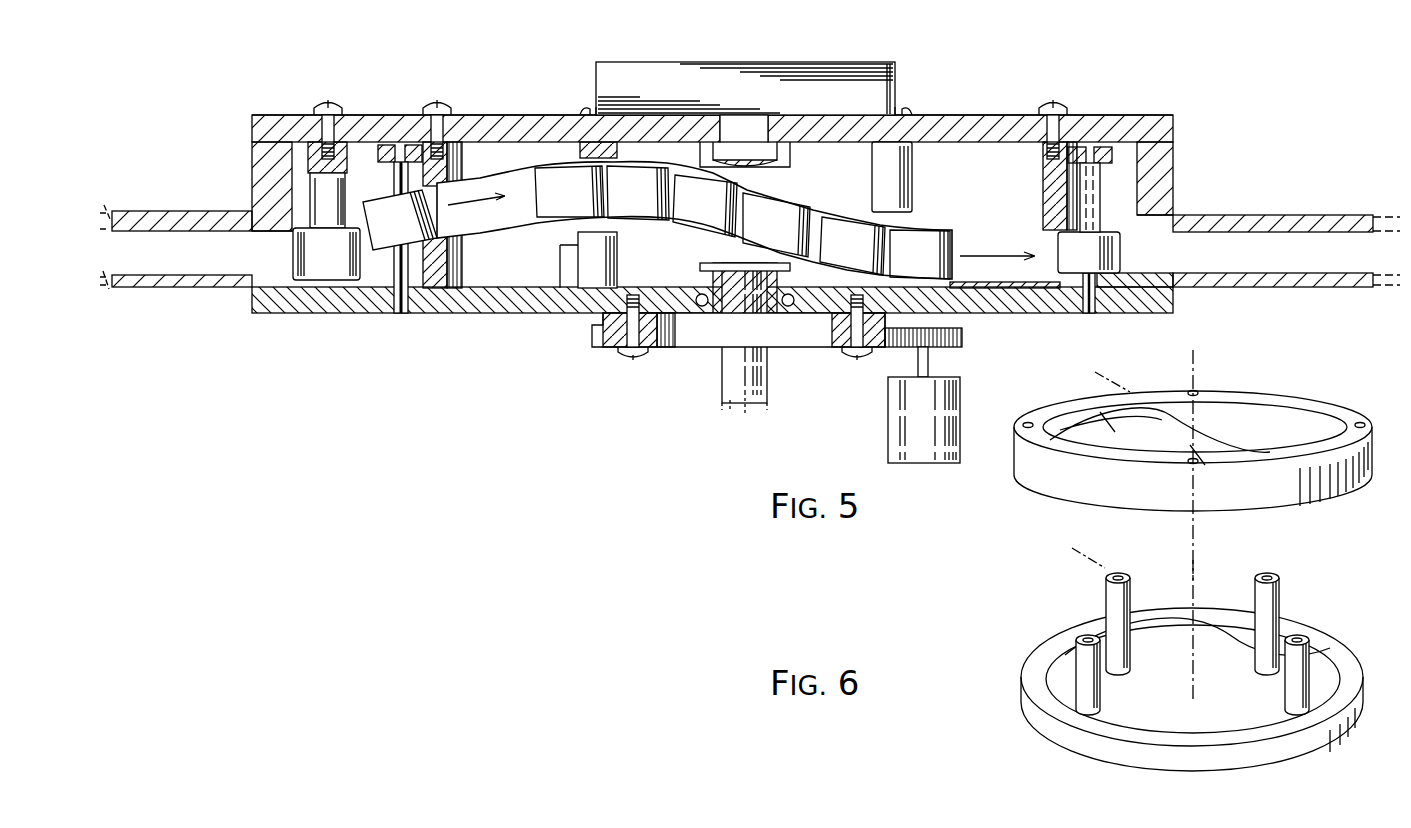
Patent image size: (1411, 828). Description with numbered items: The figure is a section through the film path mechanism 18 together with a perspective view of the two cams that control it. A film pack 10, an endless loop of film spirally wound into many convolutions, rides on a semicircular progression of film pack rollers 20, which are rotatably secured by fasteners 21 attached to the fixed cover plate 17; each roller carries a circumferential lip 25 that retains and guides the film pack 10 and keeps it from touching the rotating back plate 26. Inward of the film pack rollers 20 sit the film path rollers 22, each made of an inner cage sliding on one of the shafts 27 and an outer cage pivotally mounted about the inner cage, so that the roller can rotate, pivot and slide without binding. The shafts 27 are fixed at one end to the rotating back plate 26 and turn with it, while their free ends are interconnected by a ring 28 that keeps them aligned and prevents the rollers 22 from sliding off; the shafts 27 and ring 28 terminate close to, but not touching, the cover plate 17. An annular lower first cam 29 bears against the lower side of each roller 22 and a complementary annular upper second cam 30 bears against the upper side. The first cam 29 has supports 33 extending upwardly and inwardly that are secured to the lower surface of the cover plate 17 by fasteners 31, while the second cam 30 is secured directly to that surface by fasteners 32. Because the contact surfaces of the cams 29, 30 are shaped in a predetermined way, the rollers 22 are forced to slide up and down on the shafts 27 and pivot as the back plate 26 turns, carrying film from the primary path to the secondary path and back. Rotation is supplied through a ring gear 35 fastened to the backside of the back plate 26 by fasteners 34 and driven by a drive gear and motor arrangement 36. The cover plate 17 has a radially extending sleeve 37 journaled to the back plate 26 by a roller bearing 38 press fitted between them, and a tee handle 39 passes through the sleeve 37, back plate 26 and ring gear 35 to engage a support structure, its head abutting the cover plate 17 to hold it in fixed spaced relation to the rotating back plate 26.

In FIG. 5, the film pack 10 is at (230, 264).
In FIG. 5, the cover plate 17 is at (487, 115).
In FIG. 5, the film path mechanism 18 is at (472, 347).
In FIG. 5, the film pack rollers 20 is at (322, 283).
In FIG. 5, the fasteners 21 is at (352, 155).
In FIG. 5, the film path rollers 22 is at (952, 248).
In FIG. 5, the circumferential lip 25 is at (352, 283).
In FIG. 5, the rotating back plate 26 is at (522, 313).
In FIG. 5, the shafts 27 is at (401, 316).
In FIG. 5, the ring 28 is at (380, 142).
In FIG. 5, the lower first cam 29 is at (491, 270).
In FIG. 6, the lower first cam 29 is at (1038, 644).
In FIG. 5, the upper second cam 30 is at (491, 167).
In FIG. 6, the upper second cam 30 is at (1330, 510).
In FIG. 5, the fasteners 31 is at (432, 98).
In FIG. 5, the fasteners 32 is at (585, 106).
In FIG. 5, the supports 33 is at (914, 168).
In FIG. 6, the supports 33 is at (1280, 612).
In FIG. 5, the fasteners 34 is at (628, 360).
In FIG. 5, the ring gear 35 is at (676, 349).
In FIG. 5, the drive gear and motor arrangement 36 is at (876, 408).
In FIG. 5, the sleeve 37 is at (790, 162).
In FIG. 5, the roller bearing 38 is at (700, 280).
In FIG. 5, the tee handle 39 is at (822, 62).